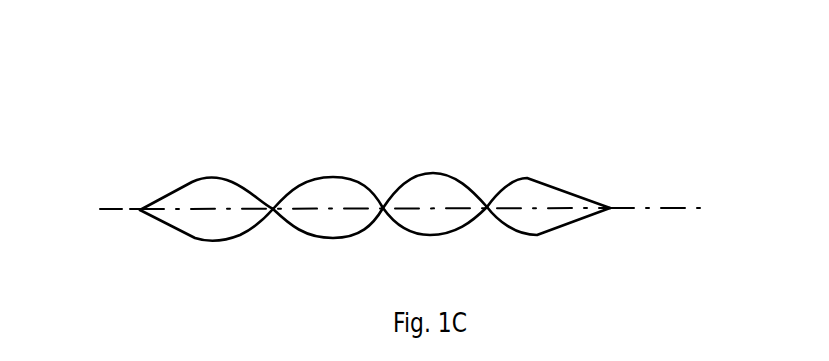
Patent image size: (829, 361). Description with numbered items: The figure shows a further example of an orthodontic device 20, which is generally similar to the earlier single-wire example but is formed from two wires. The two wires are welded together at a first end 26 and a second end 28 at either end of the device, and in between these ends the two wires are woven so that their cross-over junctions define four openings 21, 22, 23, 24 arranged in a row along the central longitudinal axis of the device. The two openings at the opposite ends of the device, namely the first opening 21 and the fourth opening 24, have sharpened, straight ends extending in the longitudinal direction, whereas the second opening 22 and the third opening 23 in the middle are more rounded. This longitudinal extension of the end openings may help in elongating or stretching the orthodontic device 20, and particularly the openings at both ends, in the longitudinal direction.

The orthodontic device 20 is at (532, 100).
The first opening 21 is at (208, 177).
The second opening 22 is at (333, 177).
The third opening 23 is at (433, 173).
The fourth opening 24 is at (552, 177).
The first end 26 is at (138, 210).
The second end 28 is at (610, 208).